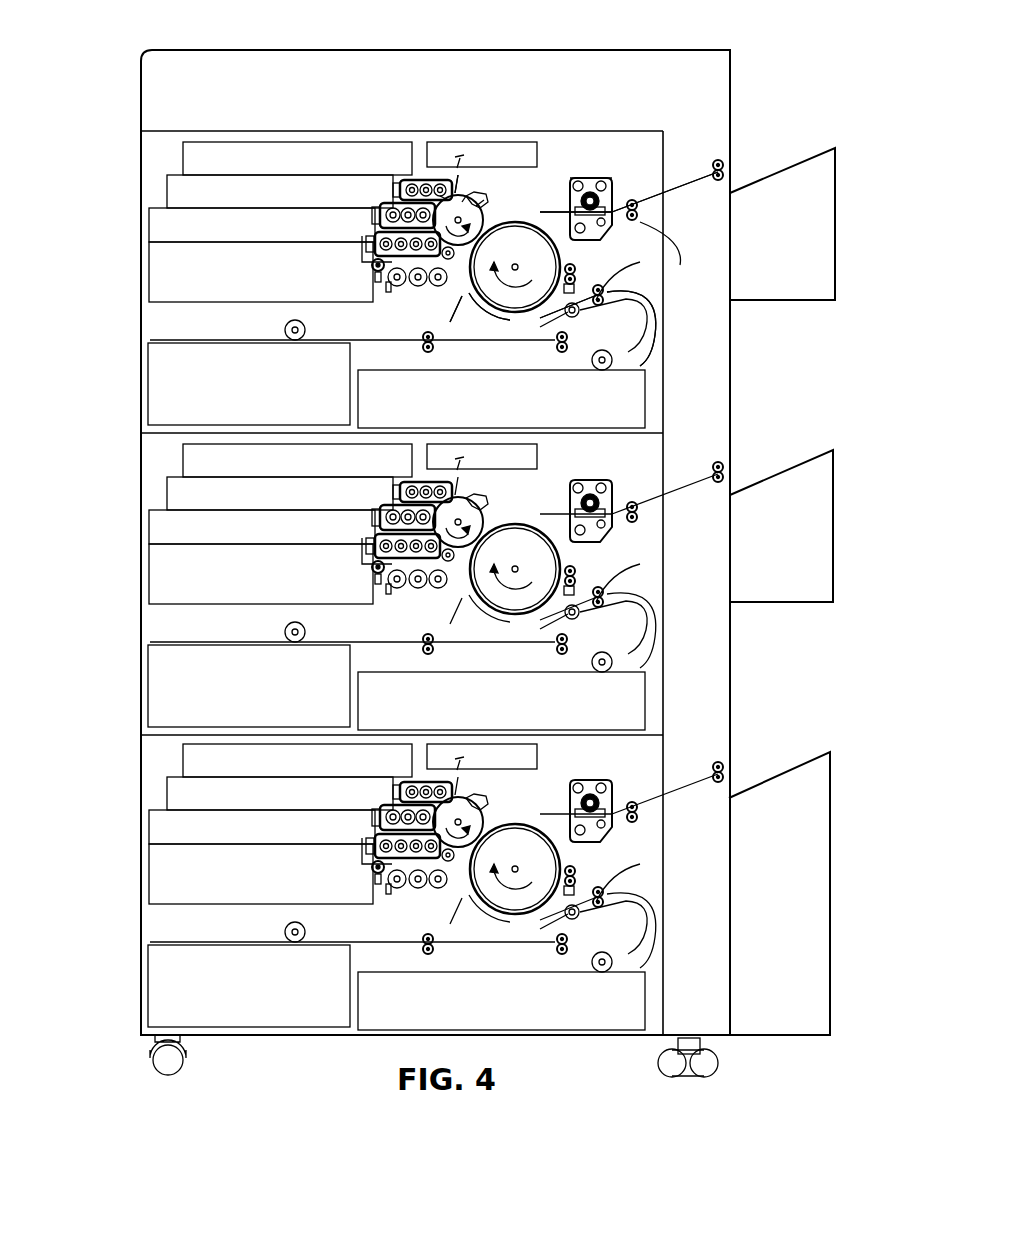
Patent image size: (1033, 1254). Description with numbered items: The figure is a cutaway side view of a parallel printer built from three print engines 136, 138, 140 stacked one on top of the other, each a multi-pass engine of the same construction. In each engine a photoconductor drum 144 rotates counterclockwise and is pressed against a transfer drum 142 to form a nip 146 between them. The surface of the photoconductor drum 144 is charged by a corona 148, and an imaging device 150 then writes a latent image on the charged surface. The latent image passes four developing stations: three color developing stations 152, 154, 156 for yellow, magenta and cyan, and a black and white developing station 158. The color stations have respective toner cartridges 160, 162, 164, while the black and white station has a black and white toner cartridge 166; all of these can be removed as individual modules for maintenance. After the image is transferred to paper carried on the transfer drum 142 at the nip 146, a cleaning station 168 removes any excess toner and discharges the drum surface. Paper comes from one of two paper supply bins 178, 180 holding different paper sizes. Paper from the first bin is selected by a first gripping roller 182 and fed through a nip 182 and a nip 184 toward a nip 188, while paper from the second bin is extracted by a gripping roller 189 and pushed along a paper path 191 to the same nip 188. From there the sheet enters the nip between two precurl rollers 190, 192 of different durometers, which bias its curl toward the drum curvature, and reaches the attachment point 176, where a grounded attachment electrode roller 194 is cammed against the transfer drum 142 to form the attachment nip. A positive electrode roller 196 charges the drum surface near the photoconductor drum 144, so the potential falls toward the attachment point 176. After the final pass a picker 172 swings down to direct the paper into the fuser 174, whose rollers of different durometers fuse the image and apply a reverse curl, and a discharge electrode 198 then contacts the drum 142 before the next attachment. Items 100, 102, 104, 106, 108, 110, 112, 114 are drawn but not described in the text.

The transfer station 100 is at (600, 212).
The exit roller pair 102 is at (612, 214).
The paper exit path 104 is at (660, 208).
The paper guide 106 is at (640, 222).
The output roller pair 108 is at (720, 160).
The output tray 110 is at (790, 285).
The output tray 112 is at (790, 585).
The output tray 114 is at (796, 780).
The print engine 136 is at (122, 212).
The print engine 138 is at (120, 510).
The print engine 140 is at (120, 795).
The transfer drum 142 is at (538, 205).
The photoconductor drum 144 is at (450, 198).
The nip 146 is at (480, 210).
The corona 148 is at (468, 202).
The imaging device 150 is at (458, 200).
The color developing station 152 is at (400, 190).
The color developing station 154 is at (385, 215).
The color developing station 156 is at (372, 244).
The black and white developing station 158 is at (397, 287).
The toner cartridge 160 is at (205, 148).
The toner cartridge 162 is at (178, 183).
The toner cartridge 164 is at (160, 226).
The black and white toner cartridge 166 is at (180, 275).
The cleaning station 168 is at (480, 205).
The picker 172 is at (586, 200).
The fuser 174 is at (596, 182).
The attachment point 176 is at (560, 338).
The paper supply bin 178 is at (150, 365).
The paper supply bin 180 is at (378, 348).
The first gripping roller 182 is at (285, 328).
The nip 184 is at (568, 344).
The nip 188 is at (600, 290).
The gripping roller 189 is at (603, 368).
The precurl roller 190 is at (578, 298).
The paper path 191 is at (660, 330).
The precurl roller 192 is at (545, 305).
The attachment electrode roller 194 is at (500, 318).
The positive electrode roller 196 is at (472, 298).
The discharge electrode 198 is at (580, 266).